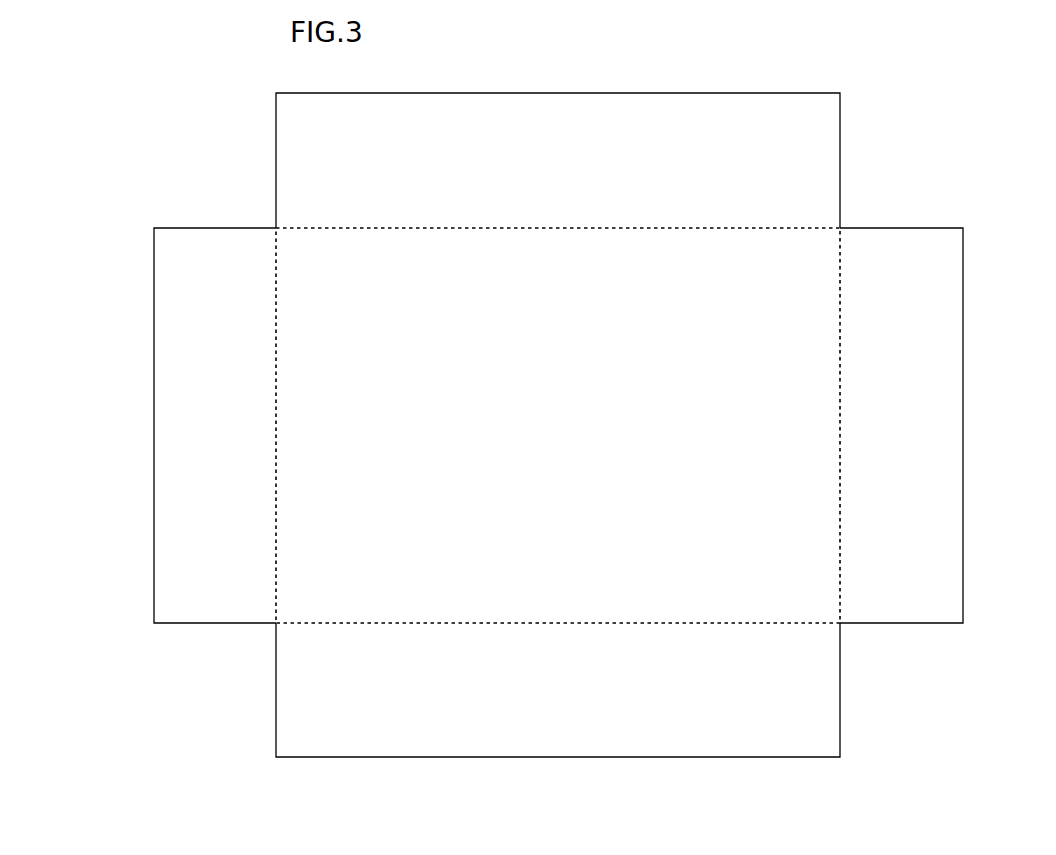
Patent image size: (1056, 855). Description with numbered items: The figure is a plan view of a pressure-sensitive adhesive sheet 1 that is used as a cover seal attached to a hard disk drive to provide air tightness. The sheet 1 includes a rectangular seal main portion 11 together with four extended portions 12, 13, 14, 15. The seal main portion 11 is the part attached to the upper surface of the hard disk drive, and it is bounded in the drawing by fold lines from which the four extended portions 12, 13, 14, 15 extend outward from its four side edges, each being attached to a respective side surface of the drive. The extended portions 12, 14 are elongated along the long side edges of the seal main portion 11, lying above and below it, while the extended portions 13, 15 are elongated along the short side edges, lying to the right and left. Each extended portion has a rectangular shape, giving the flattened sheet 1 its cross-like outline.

The pressure-sensitive adhesive sheet 1 is at (912, 676).
The seal main portion 11 is at (817, 260).
The extended portion 12 is at (543, 113).
The extended portion 13 is at (927, 452).
The extended portion 14 is at (532, 730).
The extended portion 15 is at (177, 440).